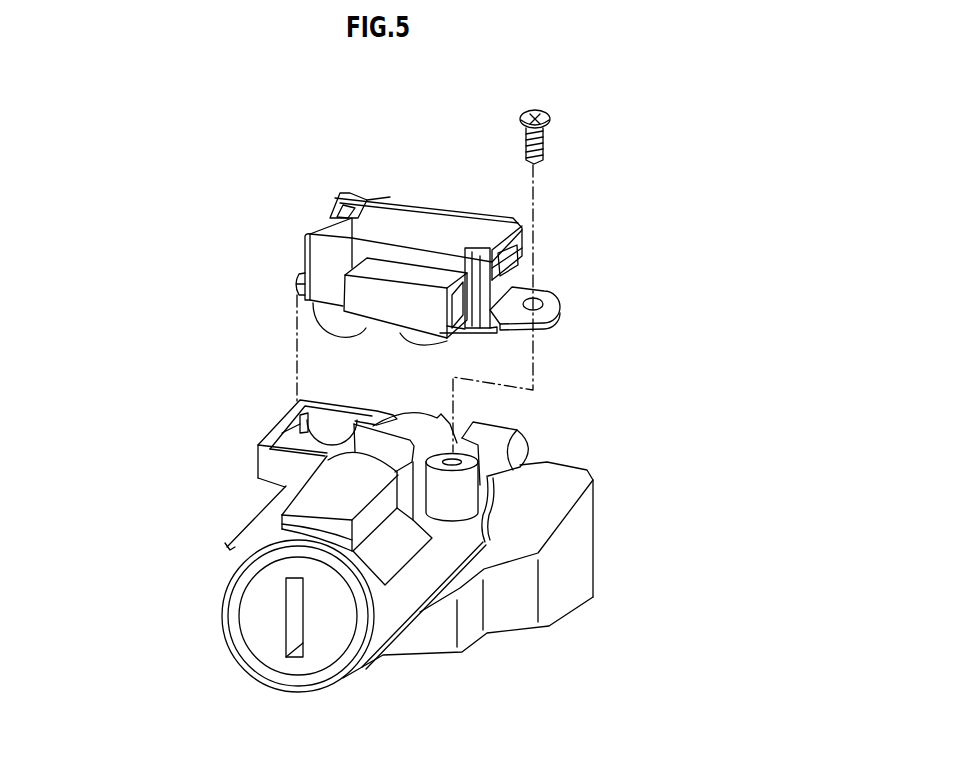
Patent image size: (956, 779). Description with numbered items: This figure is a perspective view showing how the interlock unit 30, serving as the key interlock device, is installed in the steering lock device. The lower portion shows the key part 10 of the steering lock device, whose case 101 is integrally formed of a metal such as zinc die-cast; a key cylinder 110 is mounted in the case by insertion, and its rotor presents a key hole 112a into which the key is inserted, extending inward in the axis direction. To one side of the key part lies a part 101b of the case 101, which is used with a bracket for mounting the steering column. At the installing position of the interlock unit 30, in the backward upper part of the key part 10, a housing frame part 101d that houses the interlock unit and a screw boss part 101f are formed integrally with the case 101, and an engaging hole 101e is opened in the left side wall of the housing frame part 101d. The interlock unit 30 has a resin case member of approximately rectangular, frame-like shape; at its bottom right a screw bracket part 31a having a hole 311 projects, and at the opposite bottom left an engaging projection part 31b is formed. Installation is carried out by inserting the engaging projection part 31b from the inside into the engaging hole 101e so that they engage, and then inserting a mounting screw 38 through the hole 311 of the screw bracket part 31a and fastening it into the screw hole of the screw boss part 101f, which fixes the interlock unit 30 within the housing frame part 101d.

The interlock unit 30 is at (408, 218).
The screw bracket part 31a is at (562, 320).
The engaging projection part 31b is at (294, 277).
The hole 311 is at (540, 297).
The mounting screw 38 is at (547, 142).
The key part 10 is at (277, 533).
The key cylinder 110 is at (253, 628).
The key hole 112a is at (305, 632).
The case 101 is at (385, 628).
The part of the case 101b is at (587, 542).
The housing frame part 101d is at (310, 393).
The engaging hole 101e is at (307, 422).
The screw boss part 101f is at (468, 458).